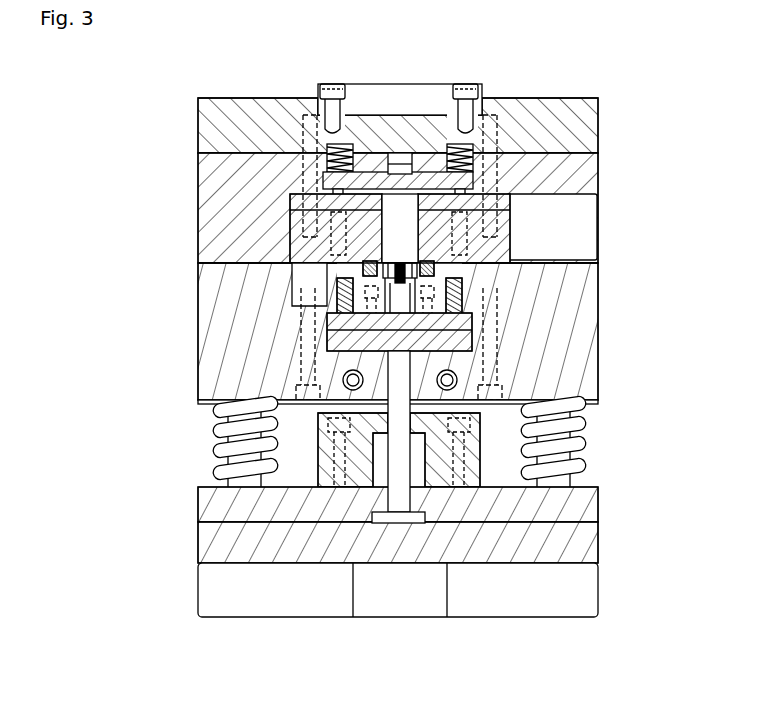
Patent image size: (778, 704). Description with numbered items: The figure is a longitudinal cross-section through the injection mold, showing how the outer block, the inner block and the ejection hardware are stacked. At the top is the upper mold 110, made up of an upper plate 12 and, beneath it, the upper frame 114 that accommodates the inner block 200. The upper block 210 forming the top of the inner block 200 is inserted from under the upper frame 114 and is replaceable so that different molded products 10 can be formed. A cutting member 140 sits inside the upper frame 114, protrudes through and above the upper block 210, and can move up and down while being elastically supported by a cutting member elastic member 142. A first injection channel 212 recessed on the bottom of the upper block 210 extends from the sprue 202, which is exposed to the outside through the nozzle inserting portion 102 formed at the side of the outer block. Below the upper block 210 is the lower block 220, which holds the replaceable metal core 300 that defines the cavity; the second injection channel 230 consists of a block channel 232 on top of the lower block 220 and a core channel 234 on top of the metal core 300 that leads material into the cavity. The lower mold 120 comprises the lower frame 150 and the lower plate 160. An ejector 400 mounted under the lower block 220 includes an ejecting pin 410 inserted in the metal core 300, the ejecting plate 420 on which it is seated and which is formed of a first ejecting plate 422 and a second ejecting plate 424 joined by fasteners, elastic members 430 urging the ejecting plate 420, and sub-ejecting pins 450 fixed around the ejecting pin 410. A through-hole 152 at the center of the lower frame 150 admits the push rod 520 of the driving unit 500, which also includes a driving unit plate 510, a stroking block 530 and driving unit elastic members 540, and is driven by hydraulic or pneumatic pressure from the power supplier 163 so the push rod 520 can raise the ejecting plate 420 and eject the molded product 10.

The molded product 10 is at (409, 196).
The upper fixing plate 12 is at (215, 141).
The nozzle inserting portion 102 is at (584, 241).
The upper mold 110 is at (339, 180).
The upper frame 114 is at (215, 186).
The lower mold 120 is at (322, 448).
The cutting member 140 is at (425, 185).
The cutting member elastic member 142 is at (353, 145).
The lower frame 150 is at (215, 423).
The through-hole 152 is at (540, 404).
The lower plate 160 is at (212, 457).
The power supplier 163 is at (405, 612).
The inner block 200 is at (315, 297).
The sprue 202 is at (508, 256).
The upper block 210 is at (305, 250).
The first injection channel 212 is at (548, 193).
The lower block 220 is at (325, 265).
The second injection channel 230 is at (541, 273).
The block channel 232 is at (445, 283).
The core channel 234 is at (428, 273).
The metal core 300 is at (300, 276).
The ejector 400 is at (523, 351).
The ejecting pin 410 is at (472, 345).
The ejecting plate 420 is at (467, 351).
The first ejecting plate 422 is at (335, 298).
The second ejecting plate 424 is at (328, 348).
The elastic members 430 is at (472, 312).
The sub-ejecting pins 450 is at (330, 256).
The driving unit 500 is at (456, 457).
The driving unit plate 510 is at (563, 545).
The push rod 520 is at (420, 502).
The stroking block 530 is at (470, 470).
The driving unit elastic members 540 is at (480, 450).